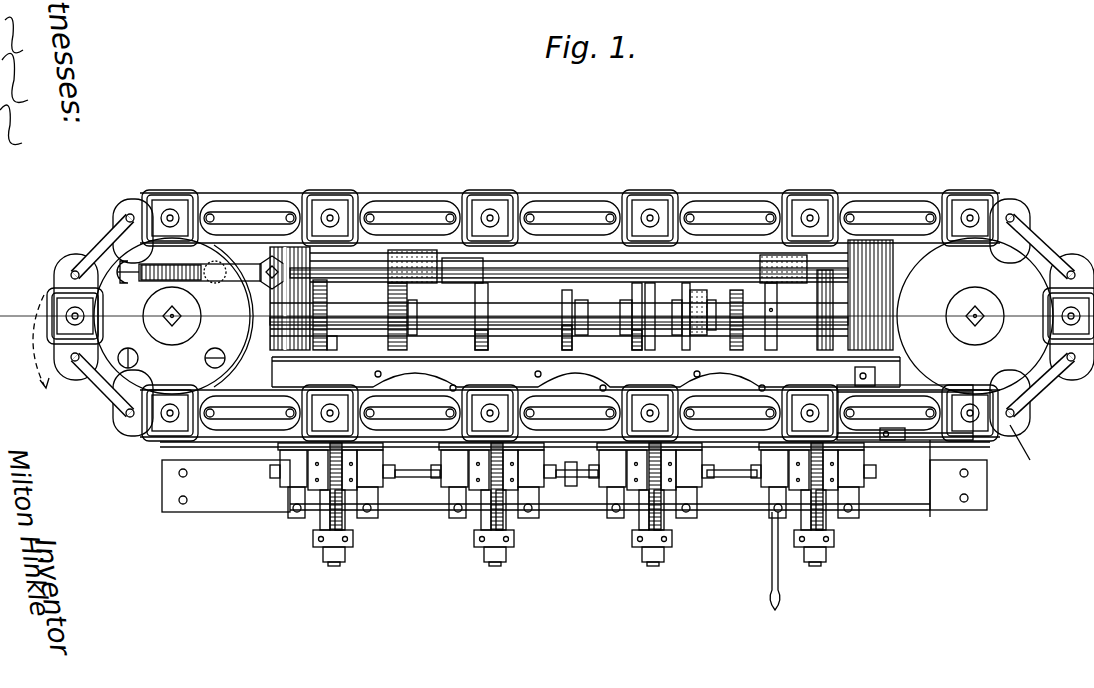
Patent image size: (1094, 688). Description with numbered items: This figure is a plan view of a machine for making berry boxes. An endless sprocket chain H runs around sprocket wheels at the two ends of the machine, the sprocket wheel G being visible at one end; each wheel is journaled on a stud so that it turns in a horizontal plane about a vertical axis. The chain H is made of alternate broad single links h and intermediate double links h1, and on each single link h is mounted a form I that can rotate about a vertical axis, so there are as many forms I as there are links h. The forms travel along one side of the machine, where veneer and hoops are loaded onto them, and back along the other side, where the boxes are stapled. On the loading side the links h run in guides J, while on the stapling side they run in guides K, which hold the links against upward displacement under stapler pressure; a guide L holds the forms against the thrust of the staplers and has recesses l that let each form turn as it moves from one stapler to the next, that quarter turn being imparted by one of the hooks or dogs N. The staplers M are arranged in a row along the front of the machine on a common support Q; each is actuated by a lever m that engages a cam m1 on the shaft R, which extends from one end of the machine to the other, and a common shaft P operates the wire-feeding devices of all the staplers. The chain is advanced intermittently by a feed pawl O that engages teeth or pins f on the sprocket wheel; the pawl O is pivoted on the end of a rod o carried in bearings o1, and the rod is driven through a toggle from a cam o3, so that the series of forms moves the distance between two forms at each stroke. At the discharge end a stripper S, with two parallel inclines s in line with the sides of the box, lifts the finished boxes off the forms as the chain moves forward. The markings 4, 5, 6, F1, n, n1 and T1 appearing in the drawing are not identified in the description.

The form I is at (322, 205).
The single link h is at (366, 210).
The double link h1 is at (403, 218).
The bearing o1 is at (417, 262).
The shaft R is at (522, 310).
The guide J is at (578, 242).
The rod o is at (622, 272).
The gear 4 is at (693, 282).
The collar 5 is at (708, 290).
The hub 6 is at (740, 272).
The cam o3 is at (702, 348).
The sprocket chain H is at (1010, 205).
The sprocket wheel G is at (975, 316).
The feed pawl O is at (200, 268).
The tooth or pin f is at (128, 268).
The arrow/frame F1 is at (72, 365).
The cam m1 is at (327, 294).
The lever m is at (480, 295).
The recess l is at (415, 380).
The guide L is at (559, 344).
The hook or dog N is at (450, 388).
The arm n is at (1021, 454).
The arm n1 is at (1040, 385).
The incline s is at (910, 390).
The stripper S is at (915, 447).
The common support Q is at (205, 508).
The stapler M is at (320, 485).
The guide K is at (424, 465).
The coupling T1 is at (569, 487).
The shaft P is at (738, 508).